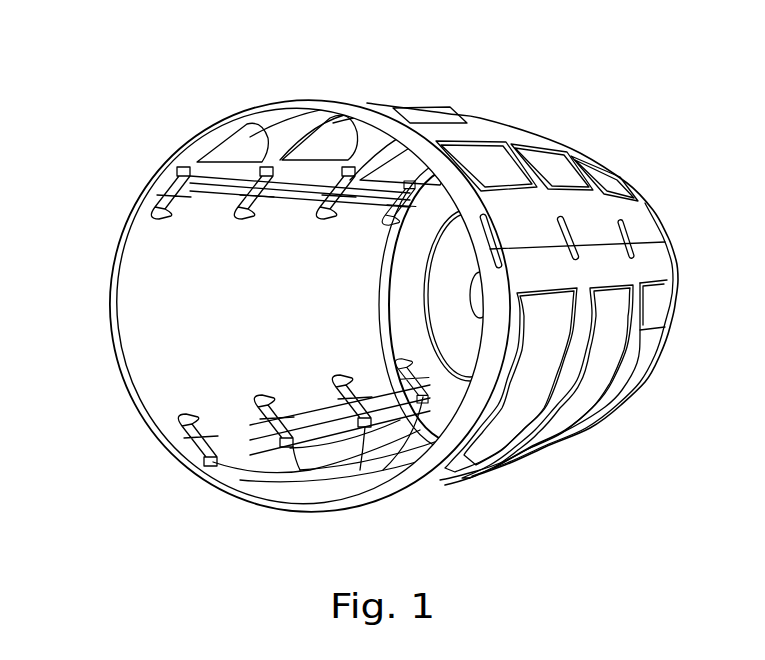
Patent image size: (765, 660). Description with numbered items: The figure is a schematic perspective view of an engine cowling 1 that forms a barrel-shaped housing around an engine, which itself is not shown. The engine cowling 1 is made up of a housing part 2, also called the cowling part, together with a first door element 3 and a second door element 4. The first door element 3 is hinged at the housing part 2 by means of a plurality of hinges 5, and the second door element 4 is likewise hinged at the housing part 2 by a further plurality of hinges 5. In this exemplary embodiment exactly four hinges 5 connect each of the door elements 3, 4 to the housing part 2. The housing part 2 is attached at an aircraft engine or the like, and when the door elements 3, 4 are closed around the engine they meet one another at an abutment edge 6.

The engine cowling 1 is at (121, 159).
The housing part 2 is at (110, 290).
The first door element 3 is at (540, 138).
The second door element 4 is at (647, 348).
The hinges 5 is at (353, 107).
The abutment edge 6 is at (645, 241).